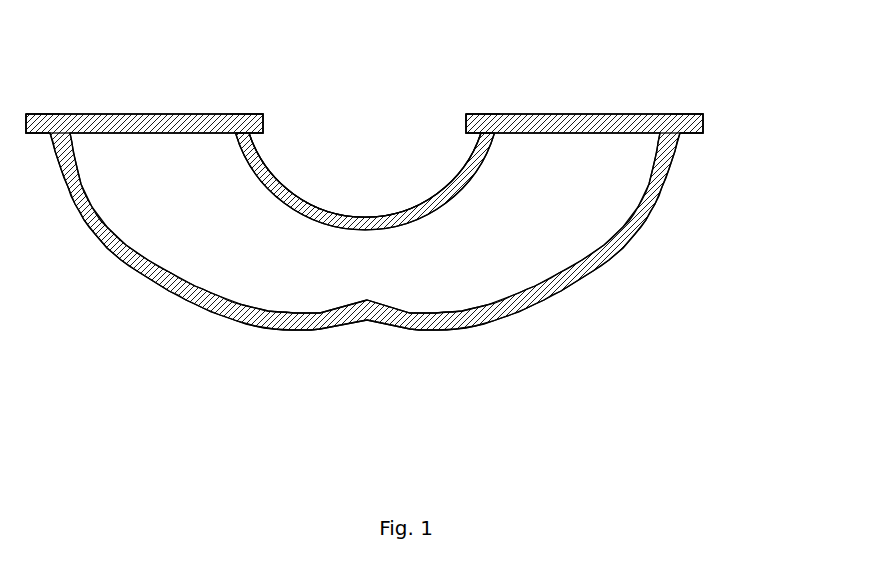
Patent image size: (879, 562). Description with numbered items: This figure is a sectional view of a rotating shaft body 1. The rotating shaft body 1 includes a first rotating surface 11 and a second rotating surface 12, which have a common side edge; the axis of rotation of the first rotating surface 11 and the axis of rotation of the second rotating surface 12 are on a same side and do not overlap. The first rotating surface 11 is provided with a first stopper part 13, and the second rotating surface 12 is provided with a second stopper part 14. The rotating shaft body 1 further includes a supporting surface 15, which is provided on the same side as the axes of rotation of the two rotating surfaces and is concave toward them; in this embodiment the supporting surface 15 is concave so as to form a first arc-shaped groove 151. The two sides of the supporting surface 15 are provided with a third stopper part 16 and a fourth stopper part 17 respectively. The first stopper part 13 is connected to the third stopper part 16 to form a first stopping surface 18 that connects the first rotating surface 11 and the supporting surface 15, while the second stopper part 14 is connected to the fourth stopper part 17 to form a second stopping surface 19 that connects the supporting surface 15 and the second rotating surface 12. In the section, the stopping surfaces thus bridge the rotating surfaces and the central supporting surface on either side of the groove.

The rotating shaft body 1 is at (697, 229).
The first rotating surface 11 is at (227, 313).
The second rotating surface 12 is at (532, 302).
The first stopper part 13 is at (33, 118).
The second stopper part 14 is at (687, 118).
The supporting surface 15 is at (370, 223).
The first arc-shaped groove 151 is at (313, 147).
The third stopper part 16 is at (253, 118).
The fourth stopper part 17 is at (475, 118).
The first stopping surface 18 is at (143, 118).
The second stopping surface 19 is at (610, 118).